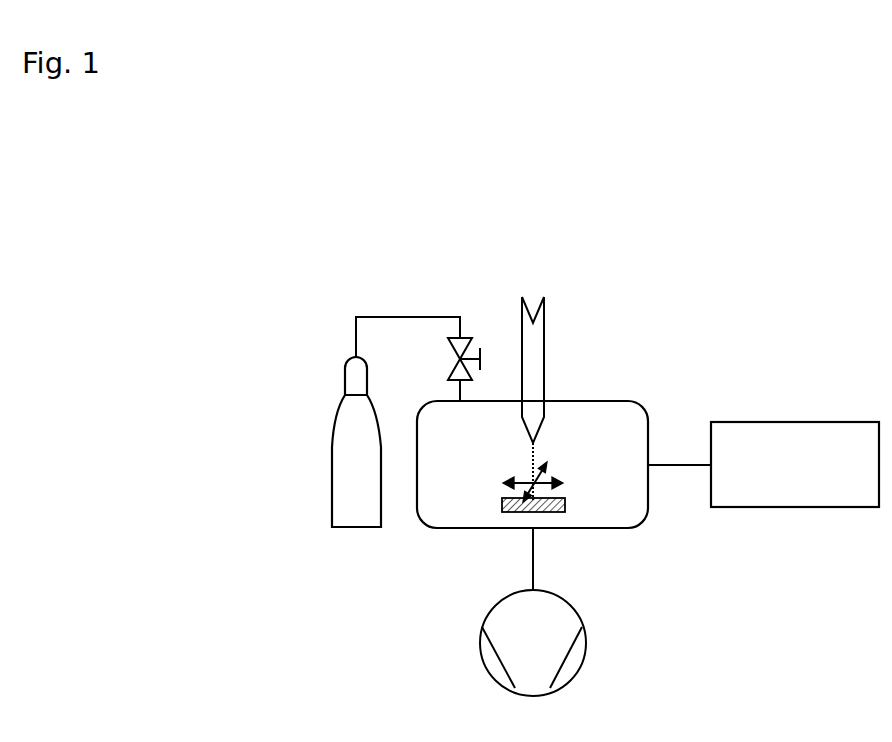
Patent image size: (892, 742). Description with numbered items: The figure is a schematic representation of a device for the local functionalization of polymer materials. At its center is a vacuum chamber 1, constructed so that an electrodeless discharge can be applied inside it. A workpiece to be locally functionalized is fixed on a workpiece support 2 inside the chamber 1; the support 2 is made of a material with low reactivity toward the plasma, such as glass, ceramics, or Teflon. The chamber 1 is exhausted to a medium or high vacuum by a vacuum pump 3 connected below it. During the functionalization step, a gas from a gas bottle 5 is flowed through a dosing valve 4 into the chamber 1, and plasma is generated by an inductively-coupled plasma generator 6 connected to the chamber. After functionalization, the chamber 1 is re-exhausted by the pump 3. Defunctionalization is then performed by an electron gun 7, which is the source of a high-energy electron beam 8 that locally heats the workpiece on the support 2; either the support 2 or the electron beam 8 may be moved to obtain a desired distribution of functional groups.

The vacuum chamber 1 is at (554, 433).
The workpiece support 2 is at (596, 543).
The vacuum pump 3 is at (576, 622).
The dosing valve 4 is at (460, 324).
The gas bottle 5 is at (324, 429).
The plasma generator 6 is at (763, 436).
The electron gun 7 is at (576, 365).
The high-energy electron beam 8 is at (559, 462).